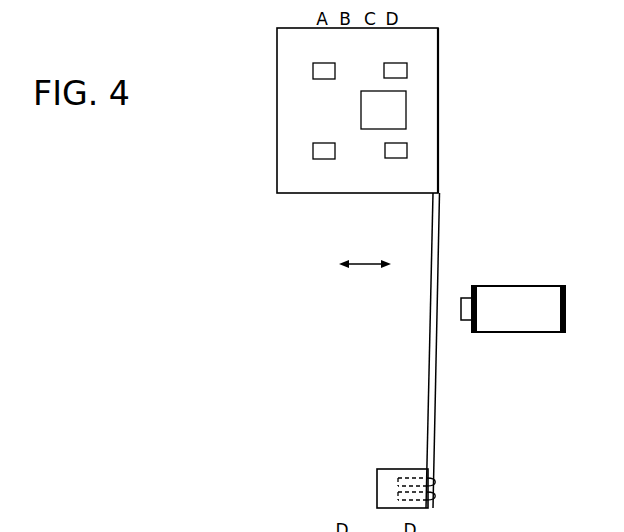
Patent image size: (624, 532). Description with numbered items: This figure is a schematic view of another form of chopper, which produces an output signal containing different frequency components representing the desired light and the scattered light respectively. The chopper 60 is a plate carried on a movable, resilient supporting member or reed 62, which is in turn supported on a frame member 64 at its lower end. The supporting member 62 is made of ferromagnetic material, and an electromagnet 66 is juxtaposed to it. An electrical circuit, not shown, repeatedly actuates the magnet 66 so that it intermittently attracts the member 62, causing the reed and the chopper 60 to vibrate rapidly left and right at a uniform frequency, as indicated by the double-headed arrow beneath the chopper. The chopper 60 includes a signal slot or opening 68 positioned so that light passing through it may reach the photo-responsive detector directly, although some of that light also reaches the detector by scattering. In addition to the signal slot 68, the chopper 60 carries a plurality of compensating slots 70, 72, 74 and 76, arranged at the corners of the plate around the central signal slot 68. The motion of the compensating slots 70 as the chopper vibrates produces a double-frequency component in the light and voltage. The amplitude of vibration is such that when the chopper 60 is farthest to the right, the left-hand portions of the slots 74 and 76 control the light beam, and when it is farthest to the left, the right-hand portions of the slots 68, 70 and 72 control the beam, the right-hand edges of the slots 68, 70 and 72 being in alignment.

The chopper 60 is at (356, 180).
The supporting member 62 is at (441, 262).
The frame member 64 is at (383, 474).
The electromagnet 66 is at (538, 292).
The signal slot 68 is at (407, 110).
The compensating slot 70 is at (408, 66).
The compensating slot 72 is at (408, 153).
The compensating slot 74 is at (311, 64).
The compensating slot 76 is at (311, 145).